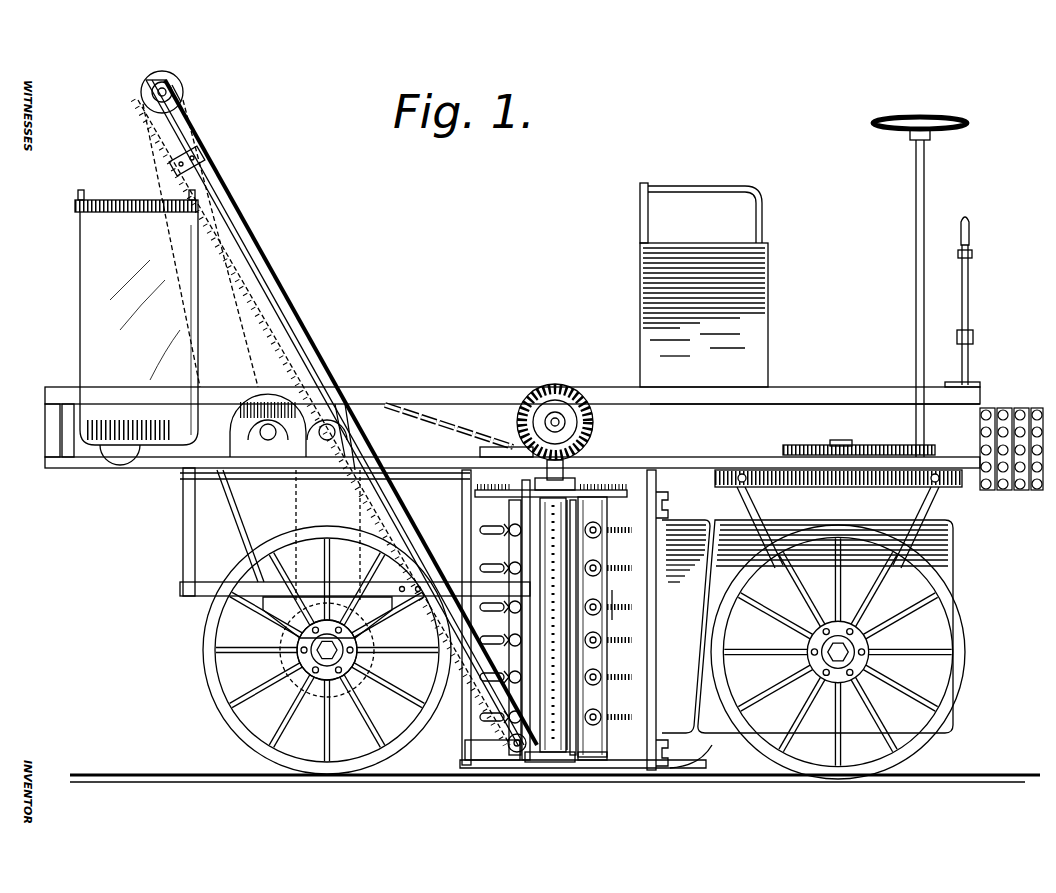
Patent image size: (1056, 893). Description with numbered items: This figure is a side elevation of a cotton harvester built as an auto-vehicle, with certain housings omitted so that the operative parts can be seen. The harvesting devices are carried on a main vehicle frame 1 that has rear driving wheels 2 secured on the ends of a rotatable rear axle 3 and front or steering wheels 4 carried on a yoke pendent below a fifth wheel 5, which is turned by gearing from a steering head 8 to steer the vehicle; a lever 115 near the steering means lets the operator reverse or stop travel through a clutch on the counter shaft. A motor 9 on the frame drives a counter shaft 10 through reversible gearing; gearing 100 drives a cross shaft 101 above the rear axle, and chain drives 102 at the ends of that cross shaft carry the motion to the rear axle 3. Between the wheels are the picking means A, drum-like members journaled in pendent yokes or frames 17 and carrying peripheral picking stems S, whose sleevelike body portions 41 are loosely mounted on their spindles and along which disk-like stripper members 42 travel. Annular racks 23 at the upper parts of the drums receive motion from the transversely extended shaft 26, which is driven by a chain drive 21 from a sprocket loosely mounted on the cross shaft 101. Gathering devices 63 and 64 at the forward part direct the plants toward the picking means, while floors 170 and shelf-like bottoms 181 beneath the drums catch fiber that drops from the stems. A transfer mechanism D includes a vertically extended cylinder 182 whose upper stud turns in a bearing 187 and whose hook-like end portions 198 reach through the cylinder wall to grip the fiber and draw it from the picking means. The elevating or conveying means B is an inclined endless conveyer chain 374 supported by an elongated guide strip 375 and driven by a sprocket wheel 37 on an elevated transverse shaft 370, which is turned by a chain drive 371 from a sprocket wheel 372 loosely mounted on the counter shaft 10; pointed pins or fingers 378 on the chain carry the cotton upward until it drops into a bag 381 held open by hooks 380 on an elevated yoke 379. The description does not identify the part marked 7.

The main vehicle frame 1 is at (388, 396).
The rear driving wheels 2 is at (205, 634).
The rear axle 3 is at (316, 650).
The front or steering wheels 4 is at (958, 630).
The fifth wheel 5 is at (822, 470).
The frame side beam 7 is at (808, 398).
The steering head 8 is at (914, 180).
The motor 9 is at (120, 448).
The counter shaft 10 is at (270, 442).
The pendent yokes or frames 17 is at (674, 492).
The chain drive 21 is at (440, 425).
The annular gear members or racks 23 is at (602, 489).
The transversely extended shaft 26 is at (557, 418).
The sprocket wheels 37 is at (167, 86).
The sleevelike body portions 41 is at (498, 528).
The stripper members 42 is at (505, 568).
The gathering device 63 is at (945, 555).
The gathering device 64 is at (684, 630).
The gearing 100 is at (384, 437).
The cross shaft 101 is at (342, 405).
The chain drives 102 is at (355, 553).
The arm or lever 115 is at (970, 288).
The floors or bottoms 170 is at (518, 755).
The bottom or shelf-like portion 181 is at (482, 752).
The drum or cylinder 182 is at (562, 668).
The bearings 187 is at (528, 452).
The hook-like end portions 198 is at (570, 548).
The elevated transverse shaft 370 is at (150, 86).
The chain drive 371 is at (170, 164).
The sprocket wheel 372 is at (264, 412).
The conveyer chain 374 is at (252, 284).
The guide strip or member 375 is at (248, 232).
The pins or fingers 378 is at (305, 355).
The yokes 379 is at (78, 210).
The hooks or pins 380 is at (188, 197).
The bags 381 is at (139, 328).
The picking means A is at (600, 733).
The elevating or conveying means B is at (351, 412).
The transfer mechanism D is at (568, 520).
The picking stems or members S is at (612, 614).